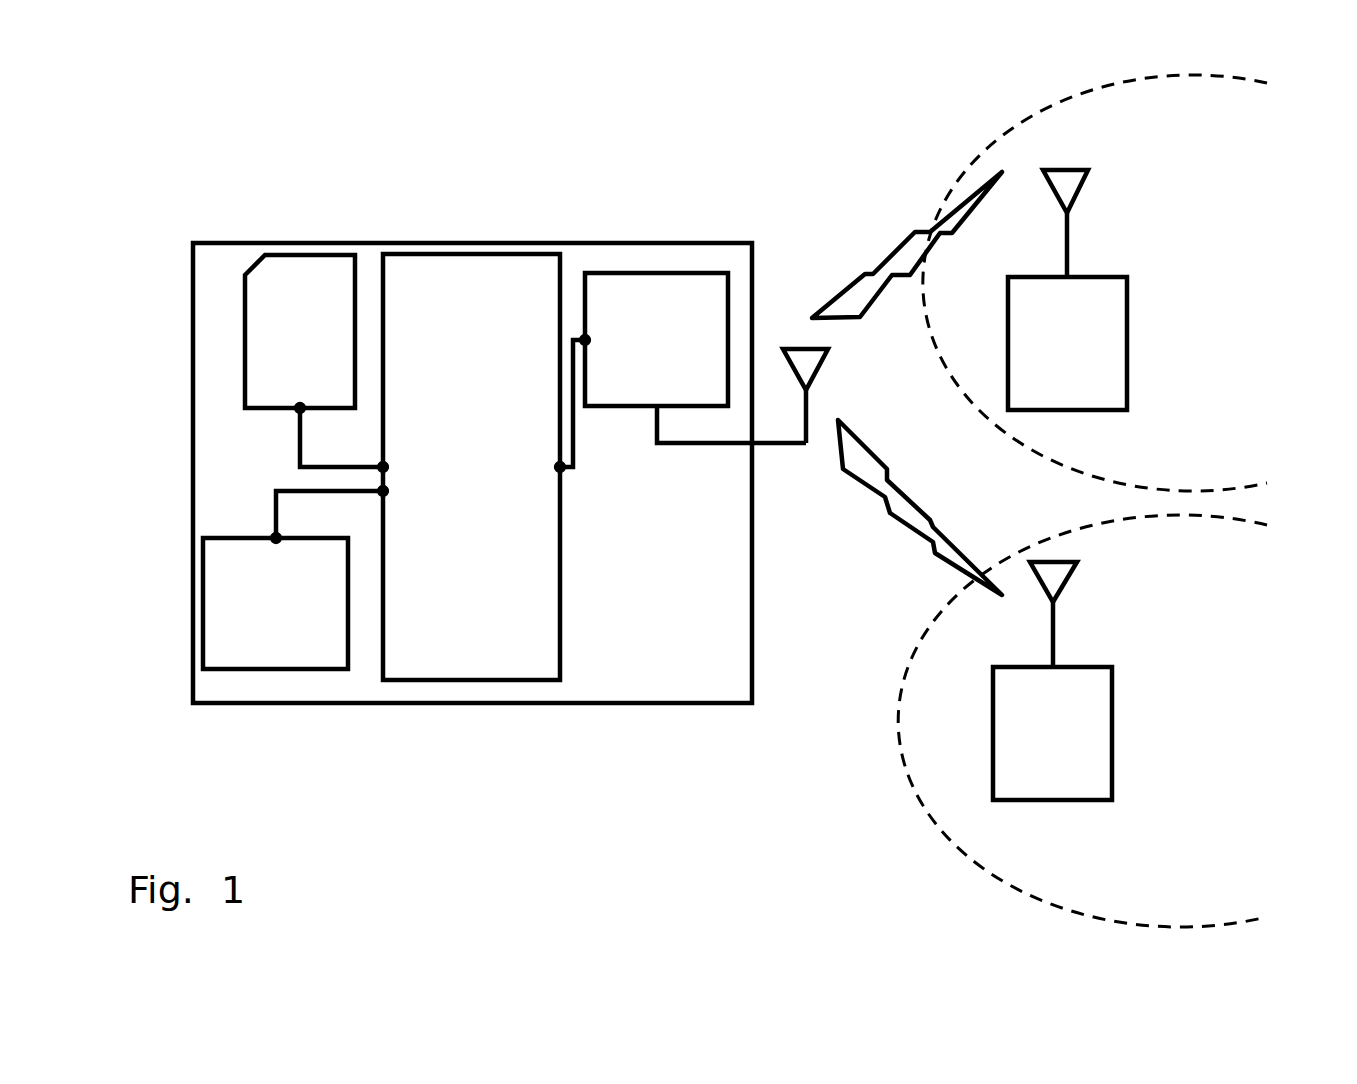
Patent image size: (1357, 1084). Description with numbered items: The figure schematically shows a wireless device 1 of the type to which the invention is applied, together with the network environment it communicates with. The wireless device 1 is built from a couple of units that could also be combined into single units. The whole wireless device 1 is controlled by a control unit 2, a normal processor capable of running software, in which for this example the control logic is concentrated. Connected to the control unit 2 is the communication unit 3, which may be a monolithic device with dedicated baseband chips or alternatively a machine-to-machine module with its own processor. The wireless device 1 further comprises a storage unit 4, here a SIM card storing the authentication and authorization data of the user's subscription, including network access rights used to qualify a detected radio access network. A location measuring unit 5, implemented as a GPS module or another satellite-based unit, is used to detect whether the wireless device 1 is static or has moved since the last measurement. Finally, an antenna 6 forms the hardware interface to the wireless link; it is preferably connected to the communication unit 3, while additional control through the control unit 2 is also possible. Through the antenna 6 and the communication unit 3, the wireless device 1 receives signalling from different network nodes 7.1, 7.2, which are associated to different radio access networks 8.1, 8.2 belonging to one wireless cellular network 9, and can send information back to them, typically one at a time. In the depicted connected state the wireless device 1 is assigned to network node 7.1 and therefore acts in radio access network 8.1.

The wireless device 1 is at (140, 186).
The control unit 2 is at (471, 467).
The communication unit 3 is at (681, 373).
The storage unit 4 is at (317, 364).
The location measuring unit 5 is at (296, 578).
The antenna 6 is at (795, 337).
The network node 7.1 is at (1067, 290).
The network node 7.2 is at (1052, 681).
The radio access network 8.1 is at (1095, 283).
The radio access network 8.2 is at (1082, 721).
The wireless cellular network 9 is at (1290, 262).